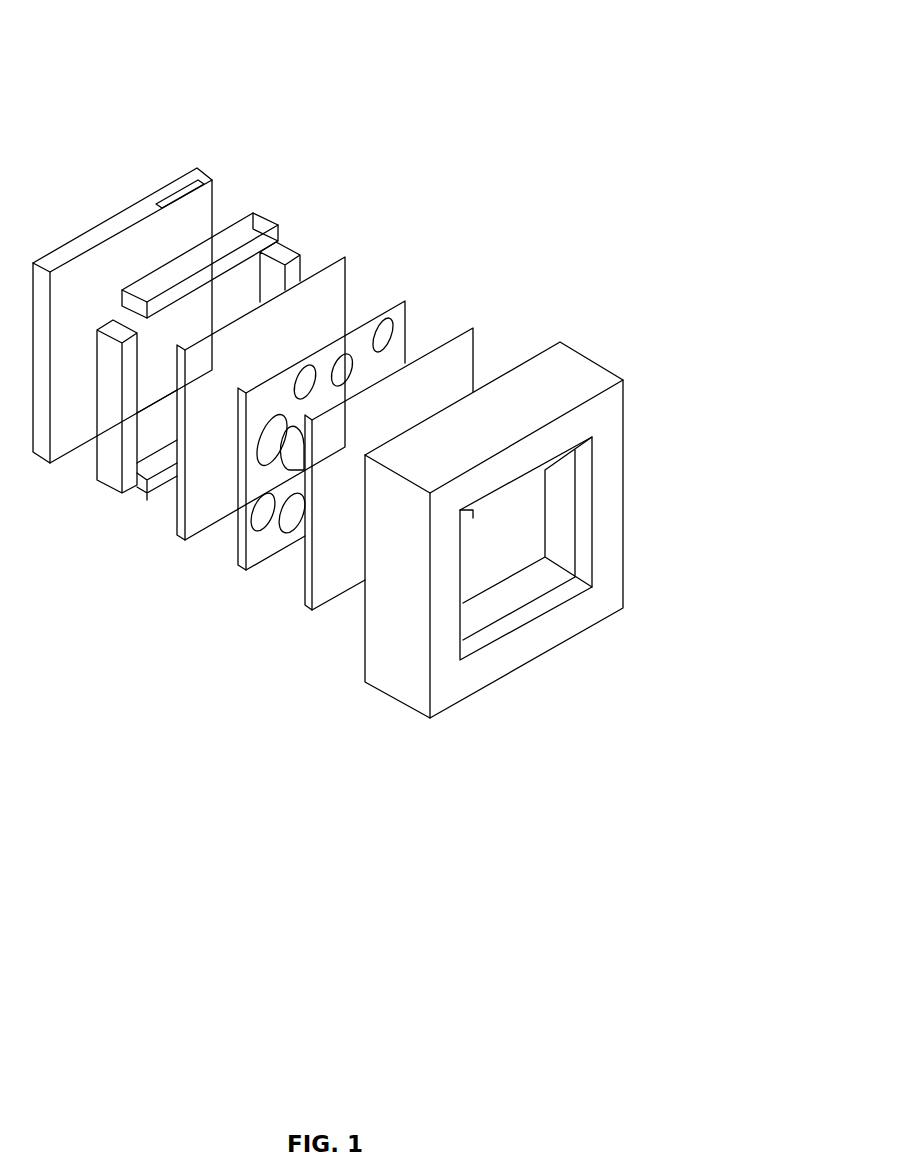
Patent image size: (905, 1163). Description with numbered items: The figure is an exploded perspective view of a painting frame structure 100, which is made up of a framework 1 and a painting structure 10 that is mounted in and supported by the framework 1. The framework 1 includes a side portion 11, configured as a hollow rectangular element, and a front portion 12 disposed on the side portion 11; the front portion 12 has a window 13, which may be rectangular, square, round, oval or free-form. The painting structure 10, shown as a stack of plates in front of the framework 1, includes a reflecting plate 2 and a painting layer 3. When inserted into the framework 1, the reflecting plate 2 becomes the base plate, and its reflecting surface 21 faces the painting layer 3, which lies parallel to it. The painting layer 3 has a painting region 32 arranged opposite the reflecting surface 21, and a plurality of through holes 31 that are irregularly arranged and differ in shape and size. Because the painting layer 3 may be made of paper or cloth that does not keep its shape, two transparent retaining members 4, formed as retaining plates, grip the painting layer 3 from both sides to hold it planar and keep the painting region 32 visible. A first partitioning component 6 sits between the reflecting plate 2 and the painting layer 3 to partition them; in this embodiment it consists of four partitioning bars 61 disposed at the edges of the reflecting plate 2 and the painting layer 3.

The painting frame structure 100 is at (631, 68).
The painting structure 10 is at (272, 98).
The framework 1 is at (503, 541).
The side portion 11 is at (515, 590).
The front portion 12 is at (608, 602).
The window 13 is at (477, 565).
The reflecting plate 2 is at (151, 328).
The reflecting surface 21 is at (70, 425).
The painting layer 3 is at (297, 446).
The through holes 31 is at (283, 412).
The painting region 32 is at (268, 540).
The retaining members 4 is at (347, 257).
The first partitioning component 6 is at (273, 215).
The partitioning bars 61 is at (292, 260).